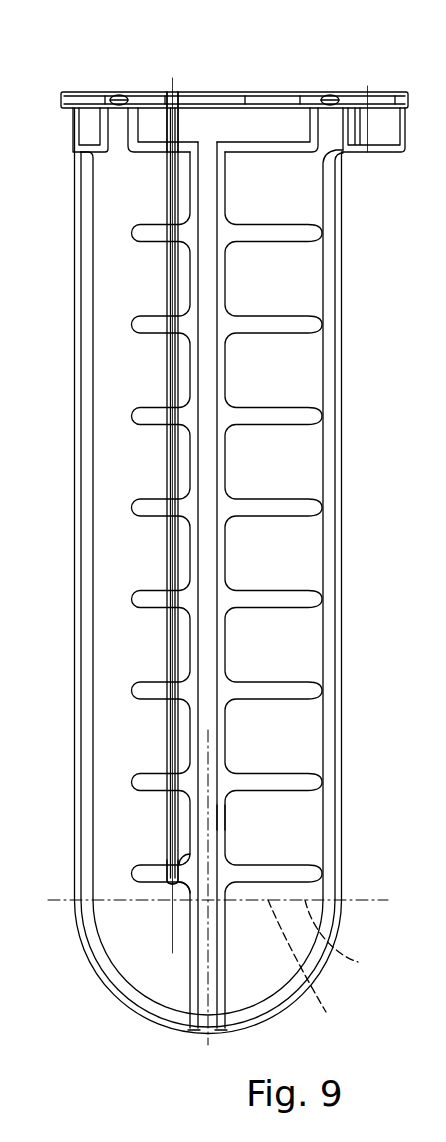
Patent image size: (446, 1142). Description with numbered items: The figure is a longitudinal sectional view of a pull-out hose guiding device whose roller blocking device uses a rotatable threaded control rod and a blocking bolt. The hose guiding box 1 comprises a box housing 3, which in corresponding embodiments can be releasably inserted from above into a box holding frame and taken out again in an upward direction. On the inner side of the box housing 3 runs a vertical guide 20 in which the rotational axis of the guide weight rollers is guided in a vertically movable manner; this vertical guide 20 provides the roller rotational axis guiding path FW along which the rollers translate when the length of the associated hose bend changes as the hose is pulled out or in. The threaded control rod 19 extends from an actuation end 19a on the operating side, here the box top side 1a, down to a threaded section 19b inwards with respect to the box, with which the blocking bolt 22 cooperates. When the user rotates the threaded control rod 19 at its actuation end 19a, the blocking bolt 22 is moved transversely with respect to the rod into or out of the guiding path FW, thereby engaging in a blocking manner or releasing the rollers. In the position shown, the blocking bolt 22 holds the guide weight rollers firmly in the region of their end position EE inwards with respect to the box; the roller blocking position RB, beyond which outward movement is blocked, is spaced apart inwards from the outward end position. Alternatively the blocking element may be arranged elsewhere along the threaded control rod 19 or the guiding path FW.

The hose guiding box 1 is at (340, 170).
The box top side 1a is at (254, 92).
The box housing 3 is at (340, 263).
The threaded control rod 19 is at (165, 470).
The actuation end 19a is at (173, 96).
The threaded section 19b is at (165, 875).
The vertical guide 20 is at (210, 372).
The blocking bolt 22 is at (193, 880).
The roller rotational axis guiding path FW is at (213, 818).
The end position inwards with respect to the box EE is at (350, 944).
The roller blocking position RB is at (305, 978).